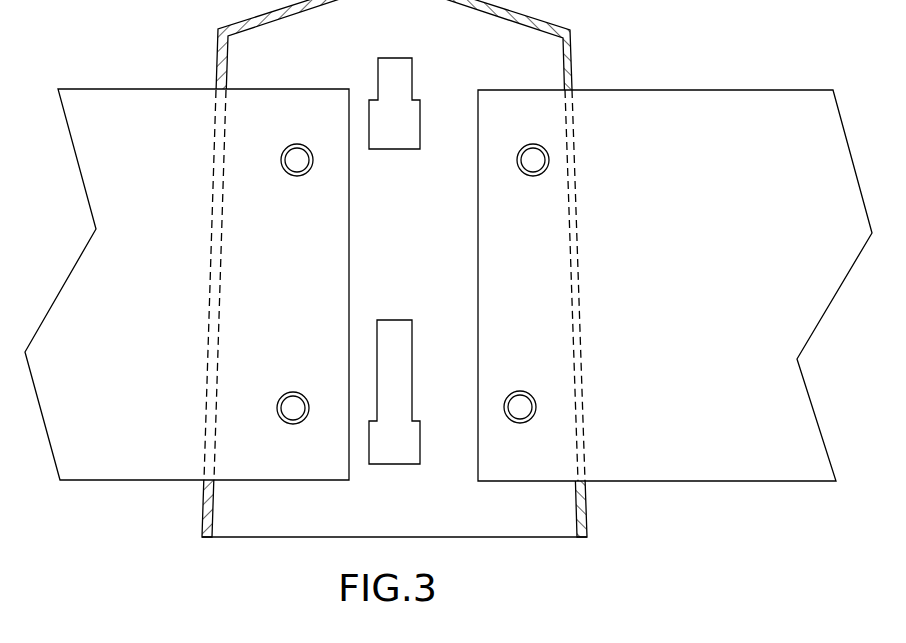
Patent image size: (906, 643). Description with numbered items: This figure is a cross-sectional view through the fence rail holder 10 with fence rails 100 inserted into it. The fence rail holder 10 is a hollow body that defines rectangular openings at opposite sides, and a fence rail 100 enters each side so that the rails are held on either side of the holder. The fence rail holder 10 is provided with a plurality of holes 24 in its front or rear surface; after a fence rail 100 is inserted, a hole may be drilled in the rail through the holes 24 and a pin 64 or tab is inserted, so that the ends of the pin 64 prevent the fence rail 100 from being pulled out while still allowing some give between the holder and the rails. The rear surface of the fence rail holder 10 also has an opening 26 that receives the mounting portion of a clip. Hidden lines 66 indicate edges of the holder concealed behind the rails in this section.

The fence rail holder 10 is at (218, 57).
The holes 24 is at (410, 127).
The opening 26 is at (398, 363).
The pin 64 is at (302, 167).
The hidden edge of clamp 66 is at (208, 305).
The fence rail 100 is at (113, 193).